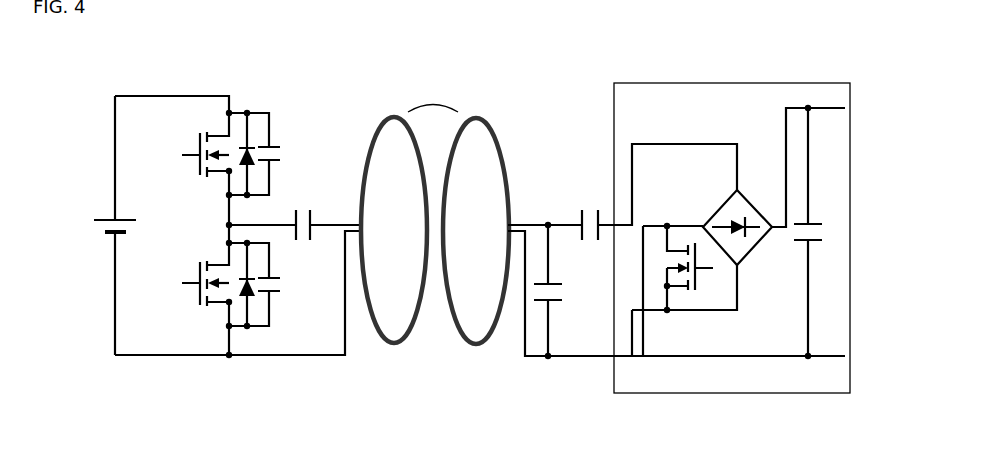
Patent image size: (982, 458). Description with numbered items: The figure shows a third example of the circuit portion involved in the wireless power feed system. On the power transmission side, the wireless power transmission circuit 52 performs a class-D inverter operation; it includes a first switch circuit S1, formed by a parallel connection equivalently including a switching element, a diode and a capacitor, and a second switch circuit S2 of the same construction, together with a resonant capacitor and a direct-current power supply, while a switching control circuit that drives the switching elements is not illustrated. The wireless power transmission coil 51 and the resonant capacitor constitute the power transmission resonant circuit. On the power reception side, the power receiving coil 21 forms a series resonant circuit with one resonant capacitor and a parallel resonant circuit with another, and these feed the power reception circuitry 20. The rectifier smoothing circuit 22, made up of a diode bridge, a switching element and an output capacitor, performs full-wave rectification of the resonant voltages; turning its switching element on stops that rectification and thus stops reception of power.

The wireless power transmission circuit 52 is at (105, 71).
The wireless power transmission coil 51 is at (393, 117).
The power receiving coil 21 is at (475, 117).
The power receiving circuit 20 is at (827, 71).
The rectifier smoothing circuit 22 is at (851, 83).
The first switch circuit S1 is at (211, 342).
The second switch circuit S2 is at (187, 176).